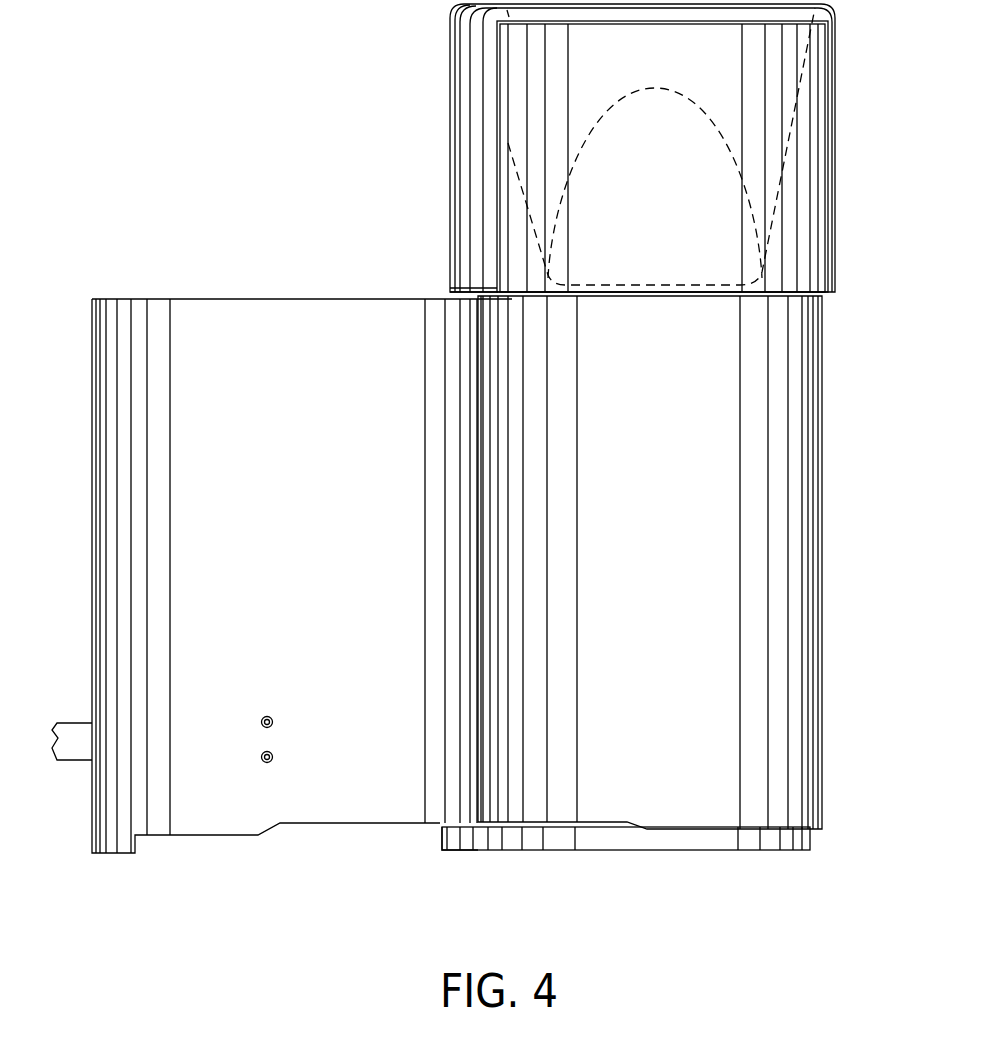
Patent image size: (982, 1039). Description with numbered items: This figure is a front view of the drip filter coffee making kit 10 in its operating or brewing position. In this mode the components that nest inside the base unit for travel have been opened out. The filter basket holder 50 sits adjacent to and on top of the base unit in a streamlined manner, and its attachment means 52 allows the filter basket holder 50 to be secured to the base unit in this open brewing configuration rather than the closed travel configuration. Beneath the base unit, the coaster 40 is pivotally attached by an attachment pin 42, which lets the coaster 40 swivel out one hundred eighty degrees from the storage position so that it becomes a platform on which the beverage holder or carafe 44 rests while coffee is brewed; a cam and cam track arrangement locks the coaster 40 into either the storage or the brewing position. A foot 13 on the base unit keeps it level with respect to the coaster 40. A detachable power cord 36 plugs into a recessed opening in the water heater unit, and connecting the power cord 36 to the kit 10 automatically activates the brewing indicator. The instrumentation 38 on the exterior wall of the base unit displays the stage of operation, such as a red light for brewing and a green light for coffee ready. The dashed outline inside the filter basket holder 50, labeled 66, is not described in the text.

The drip filter coffee making kit 10 is at (443, 120).
The foot 13 is at (122, 843).
The power cord 36 is at (80, 750).
The instrumentation 38 is at (260, 738).
The coaster 40 is at (783, 838).
The attachment pin 42 is at (462, 827).
The beverage holder or carafe 44 is at (815, 625).
The filter basket holder 50 is at (447, 170).
The attachment means 52 is at (476, 292).
The internal chamber outline 66 is at (812, 160).